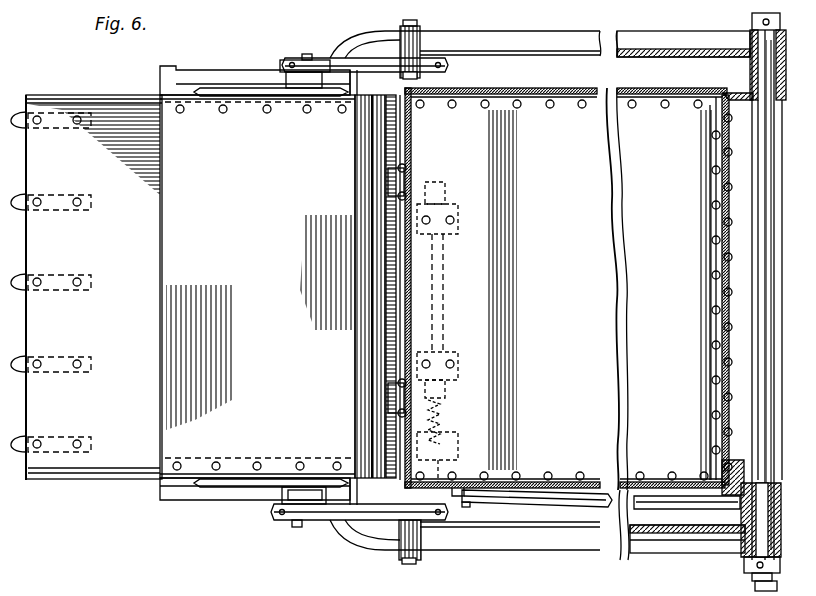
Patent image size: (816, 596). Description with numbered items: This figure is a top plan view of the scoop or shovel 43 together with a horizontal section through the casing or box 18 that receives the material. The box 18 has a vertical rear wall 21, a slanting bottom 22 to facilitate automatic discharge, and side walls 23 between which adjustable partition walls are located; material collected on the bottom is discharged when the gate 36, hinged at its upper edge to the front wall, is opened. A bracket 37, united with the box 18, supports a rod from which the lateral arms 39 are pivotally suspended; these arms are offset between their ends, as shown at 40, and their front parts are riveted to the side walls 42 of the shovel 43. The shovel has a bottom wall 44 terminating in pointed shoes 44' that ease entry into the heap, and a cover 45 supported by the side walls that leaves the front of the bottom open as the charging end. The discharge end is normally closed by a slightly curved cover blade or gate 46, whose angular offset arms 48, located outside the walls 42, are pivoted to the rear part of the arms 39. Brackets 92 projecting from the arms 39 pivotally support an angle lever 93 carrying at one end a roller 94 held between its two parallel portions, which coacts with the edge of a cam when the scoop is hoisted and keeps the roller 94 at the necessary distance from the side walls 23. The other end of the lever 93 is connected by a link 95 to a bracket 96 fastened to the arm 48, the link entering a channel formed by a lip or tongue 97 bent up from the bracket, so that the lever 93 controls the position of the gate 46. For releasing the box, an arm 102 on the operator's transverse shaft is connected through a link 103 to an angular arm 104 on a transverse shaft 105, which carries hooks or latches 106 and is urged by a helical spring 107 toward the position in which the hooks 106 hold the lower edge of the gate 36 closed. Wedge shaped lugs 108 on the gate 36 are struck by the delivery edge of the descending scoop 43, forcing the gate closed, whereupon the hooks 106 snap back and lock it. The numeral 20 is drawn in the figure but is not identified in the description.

The casing or box 18 is at (690, 82).
The base 20 is at (762, 581).
The vertical rear wall 21 is at (722, 364).
The slanting bottom 22 is at (612, 95).
The side walls 23 is at (560, 92).
The gate 36 is at (411, 148).
The bracket 37 is at (736, 96).
The lateral arms 39 is at (604, 31).
The offset 40 is at (350, 58).
The side walls 42 is at (70, 103).
The scoop or shovel 43 is at (26, 95).
The bottom wall 44 is at (35, 307).
The pointed shoes 44' is at (59, 282).
The cover 45 is at (180, 226).
The cover blade or gate 46 is at (360, 148).
The angular offset arms 48 is at (262, 96).
The brackets 92 is at (420, 36).
The angle lever 93 is at (322, 58).
The roller 94 is at (448, 62).
The link 95 is at (284, 64).
The bracket 96 is at (250, 524).
The lip or tongue 97 is at (288, 60).
The arm 102 is at (736, 512).
The link 103 is at (556, 494).
The angular arm 104 is at (468, 487).
The transverse pin or shaft 105 is at (446, 282).
The hooks or latches 106 is at (436, 185).
The helical spring 107 is at (447, 418).
The lugs 108 is at (390, 182).